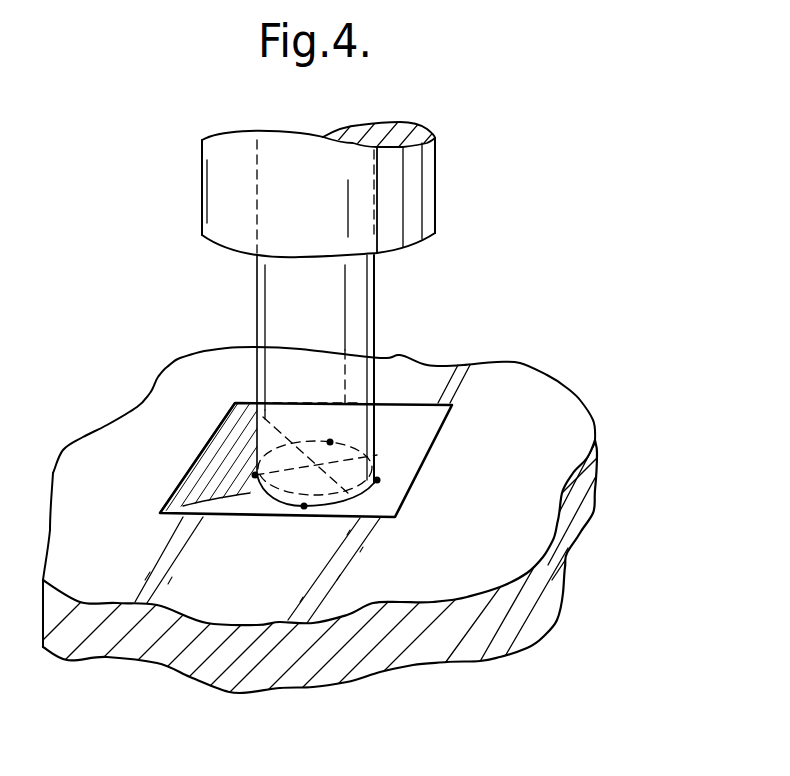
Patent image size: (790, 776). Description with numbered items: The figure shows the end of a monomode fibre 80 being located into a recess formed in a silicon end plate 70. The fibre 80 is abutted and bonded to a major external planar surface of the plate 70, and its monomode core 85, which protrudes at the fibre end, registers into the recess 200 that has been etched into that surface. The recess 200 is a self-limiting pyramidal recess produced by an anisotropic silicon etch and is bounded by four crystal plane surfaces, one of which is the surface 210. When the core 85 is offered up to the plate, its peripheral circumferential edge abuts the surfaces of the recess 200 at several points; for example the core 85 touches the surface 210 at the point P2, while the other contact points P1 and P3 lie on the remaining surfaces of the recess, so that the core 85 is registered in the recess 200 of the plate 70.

The silicon end plate 70 is at (547, 583).
The monomode fibre 80 is at (447, 174).
The monomode core 85 is at (362, 305).
The recess 200 is at (446, 372).
The surface 210 is at (213, 448).
The point P1 is at (334, 427).
The point P2 is at (235, 468).
The point P3 is at (345, 501).